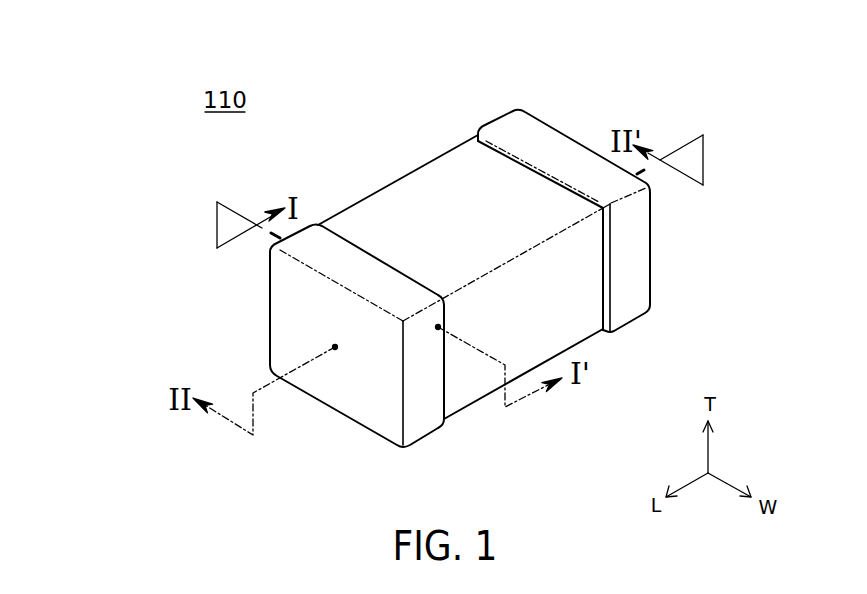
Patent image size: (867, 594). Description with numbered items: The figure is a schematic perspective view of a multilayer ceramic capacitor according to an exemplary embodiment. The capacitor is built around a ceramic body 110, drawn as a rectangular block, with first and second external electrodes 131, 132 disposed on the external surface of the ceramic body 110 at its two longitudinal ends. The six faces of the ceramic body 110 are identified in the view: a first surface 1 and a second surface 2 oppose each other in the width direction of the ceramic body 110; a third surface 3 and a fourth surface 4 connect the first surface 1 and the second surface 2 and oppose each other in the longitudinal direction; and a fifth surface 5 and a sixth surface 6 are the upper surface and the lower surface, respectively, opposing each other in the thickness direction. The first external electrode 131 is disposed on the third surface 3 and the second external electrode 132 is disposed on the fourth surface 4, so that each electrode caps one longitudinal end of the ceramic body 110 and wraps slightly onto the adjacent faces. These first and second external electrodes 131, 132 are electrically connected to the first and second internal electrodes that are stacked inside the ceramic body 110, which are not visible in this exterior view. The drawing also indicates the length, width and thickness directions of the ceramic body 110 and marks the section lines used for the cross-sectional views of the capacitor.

The first surface 1 is at (421, 160).
The second surface 2 is at (574, 297).
The third surface 3 is at (355, 395).
The fourth surface 4 is at (582, 130).
The fifth surface 5 is at (487, 188).
The sixth surface 6 is at (477, 405).
The ceramic body 110 is at (455, 170).
The first external electrode 131 is at (422, 431).
The second external electrode 132 is at (641, 260).